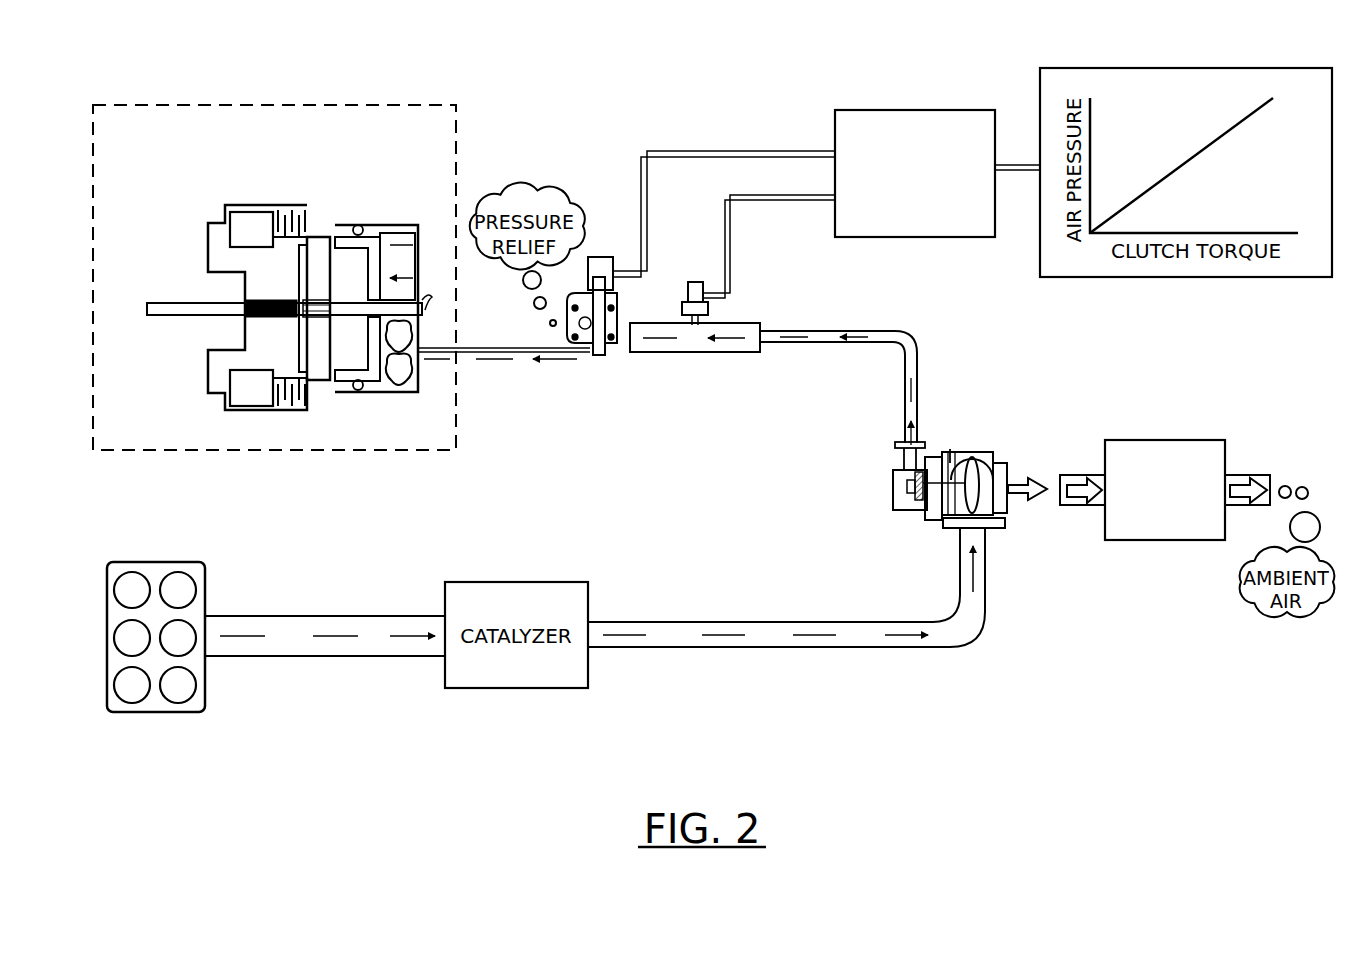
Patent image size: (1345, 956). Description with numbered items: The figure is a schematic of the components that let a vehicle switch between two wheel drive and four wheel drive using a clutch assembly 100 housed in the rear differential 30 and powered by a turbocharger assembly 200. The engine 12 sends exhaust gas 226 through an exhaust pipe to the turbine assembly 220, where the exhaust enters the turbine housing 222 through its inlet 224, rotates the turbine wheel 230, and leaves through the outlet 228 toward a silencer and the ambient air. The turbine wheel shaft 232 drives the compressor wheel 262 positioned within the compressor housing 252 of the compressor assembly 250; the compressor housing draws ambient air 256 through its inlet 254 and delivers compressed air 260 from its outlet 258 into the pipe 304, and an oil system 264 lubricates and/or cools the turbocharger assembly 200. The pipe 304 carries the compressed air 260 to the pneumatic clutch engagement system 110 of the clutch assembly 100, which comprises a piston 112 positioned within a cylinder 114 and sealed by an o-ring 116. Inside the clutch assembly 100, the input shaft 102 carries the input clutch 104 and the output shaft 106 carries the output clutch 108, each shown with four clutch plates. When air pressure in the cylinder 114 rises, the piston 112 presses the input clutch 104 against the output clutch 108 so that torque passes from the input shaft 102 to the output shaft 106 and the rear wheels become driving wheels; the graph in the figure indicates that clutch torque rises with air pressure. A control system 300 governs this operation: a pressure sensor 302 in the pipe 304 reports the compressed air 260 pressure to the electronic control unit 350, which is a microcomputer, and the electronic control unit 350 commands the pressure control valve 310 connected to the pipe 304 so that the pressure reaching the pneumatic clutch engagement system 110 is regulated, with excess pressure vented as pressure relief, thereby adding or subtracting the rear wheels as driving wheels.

The engine 12 is at (165, 713).
The rear differential 30 is at (402, 100).
The clutch assembly 100 is at (465, 137).
The input shaft 102 is at (432, 297).
The input clutch 104 is at (318, 237).
The output shaft 106 is at (187, 316).
The output clutch 108 is at (208, 250).
The pneumatic clutch engagement system 110 is at (450, 173).
The piston 112 is at (383, 232).
The cylinder 114 is at (397, 391).
The o-ring 116 is at (357, 224).
The turbocharger assembly 200 is at (1080, 386).
The turbine assembly 220 is at (1135, 421).
The turbine housing 222 is at (997, 516).
The inlet 224 is at (990, 533).
The exhaust gas 226 is at (312, 657).
The outlet 228 is at (1013, 470).
The turbine wheel 230 is at (982, 452).
The turbine wheel shaft 232 is at (953, 452).
The compressor assembly 250 is at (886, 442).
The compressor housing 252 is at (921, 522).
The inlet 254 is at (895, 476).
The ambient air 256 is at (888, 488).
The outlet 258 is at (932, 457).
The compressed air 260 is at (832, 333).
The compressor wheel 262 is at (907, 502).
The oil system 264 is at (960, 408).
The control system 300 is at (808, 130).
The pressure sensor 302 is at (688, 283).
The pipe 304 is at (686, 353).
The pressure control valve 310 is at (608, 257).
The 2/4WD electronic control unit 350 is at (905, 110).